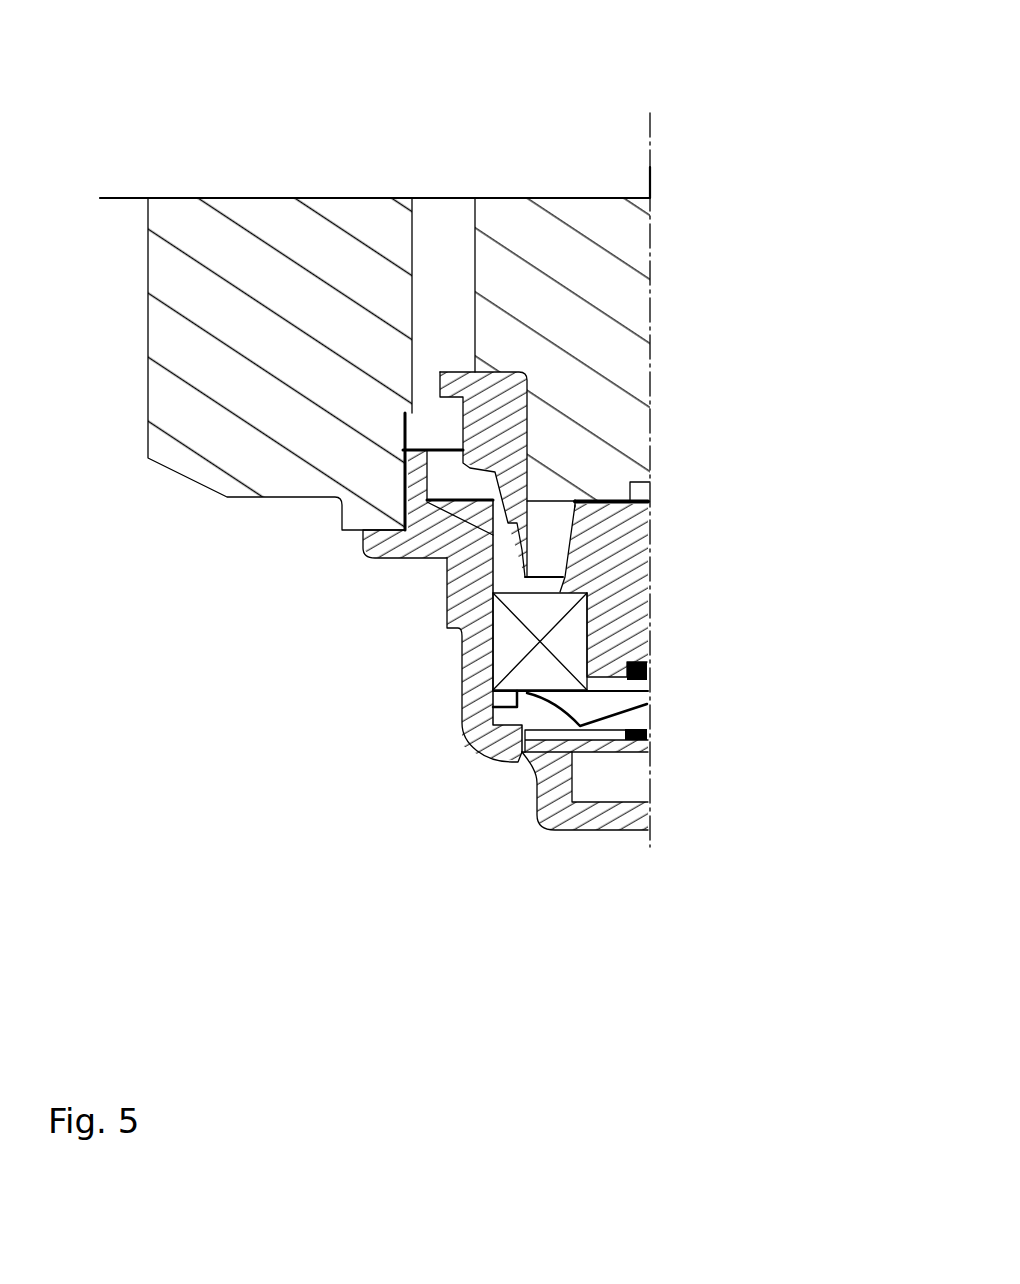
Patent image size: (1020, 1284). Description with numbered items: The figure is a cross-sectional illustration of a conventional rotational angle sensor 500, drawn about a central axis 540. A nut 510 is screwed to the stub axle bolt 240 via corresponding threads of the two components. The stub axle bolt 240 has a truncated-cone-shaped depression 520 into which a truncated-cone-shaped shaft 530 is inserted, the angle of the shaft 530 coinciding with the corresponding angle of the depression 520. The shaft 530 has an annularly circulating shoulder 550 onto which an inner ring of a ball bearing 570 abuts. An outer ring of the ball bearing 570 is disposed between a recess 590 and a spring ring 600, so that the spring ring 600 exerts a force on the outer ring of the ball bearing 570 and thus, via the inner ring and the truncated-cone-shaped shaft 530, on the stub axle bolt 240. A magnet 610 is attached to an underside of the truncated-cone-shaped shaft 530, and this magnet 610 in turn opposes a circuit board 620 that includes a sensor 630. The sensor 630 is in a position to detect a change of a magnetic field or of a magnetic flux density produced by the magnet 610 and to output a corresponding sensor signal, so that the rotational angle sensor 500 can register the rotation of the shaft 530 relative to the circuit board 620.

The rotational angle sensor 500 is at (712, 41).
The stub axle bolt 240 is at (563, 228).
The central axis 540 is at (652, 167).
The nut 510 is at (512, 405).
The truncated-cone-shaped depression 520 is at (587, 497).
The truncated-cone-shaped shaft 530 is at (637, 523).
The annularly circulating shoulder 550 is at (580, 593).
The ball bearing 570 is at (520, 645).
The recess 590 is at (445, 528).
The spring ring 600 is at (647, 705).
The magnet 610 is at (645, 668).
The circuit board 620 is at (517, 759).
The sensor 630 is at (650, 735).